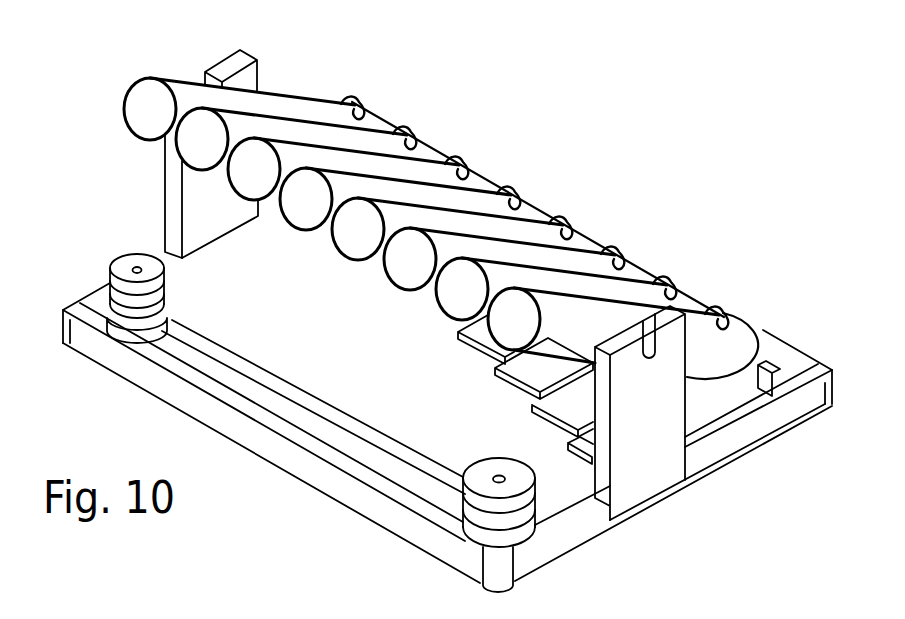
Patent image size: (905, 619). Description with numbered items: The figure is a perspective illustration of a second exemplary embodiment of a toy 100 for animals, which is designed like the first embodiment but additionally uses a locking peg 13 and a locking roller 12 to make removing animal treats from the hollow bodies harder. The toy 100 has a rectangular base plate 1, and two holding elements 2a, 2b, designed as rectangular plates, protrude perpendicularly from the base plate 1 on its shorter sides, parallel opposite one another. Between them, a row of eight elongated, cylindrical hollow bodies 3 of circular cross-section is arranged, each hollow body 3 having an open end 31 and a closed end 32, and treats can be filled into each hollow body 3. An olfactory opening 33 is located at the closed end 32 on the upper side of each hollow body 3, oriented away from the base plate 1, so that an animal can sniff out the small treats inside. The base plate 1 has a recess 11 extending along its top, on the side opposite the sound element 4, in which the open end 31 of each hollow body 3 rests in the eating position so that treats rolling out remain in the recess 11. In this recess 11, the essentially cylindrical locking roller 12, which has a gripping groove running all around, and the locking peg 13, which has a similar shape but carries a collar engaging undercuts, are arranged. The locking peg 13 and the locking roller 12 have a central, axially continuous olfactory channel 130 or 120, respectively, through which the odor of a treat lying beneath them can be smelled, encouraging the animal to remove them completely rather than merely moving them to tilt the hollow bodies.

The toy 100 is at (683, 91).
The base plate 1 is at (540, 493).
The recess 11 is at (387, 463).
The locking roller 12 is at (500, 520).
The olfactory channel 120 is at (498, 482).
The locking peg 13 is at (150, 320).
The olfactory channel 130 is at (133, 268).
The holding element 2a is at (640, 430).
The holding element 2b is at (183, 222).
The hollow body 3 is at (307, 110).
The open end 31 is at (147, 106).
The closed end 32 is at (404, 119).
The olfactory opening 33 is at (723, 302).
The sound element 4 is at (717, 390).